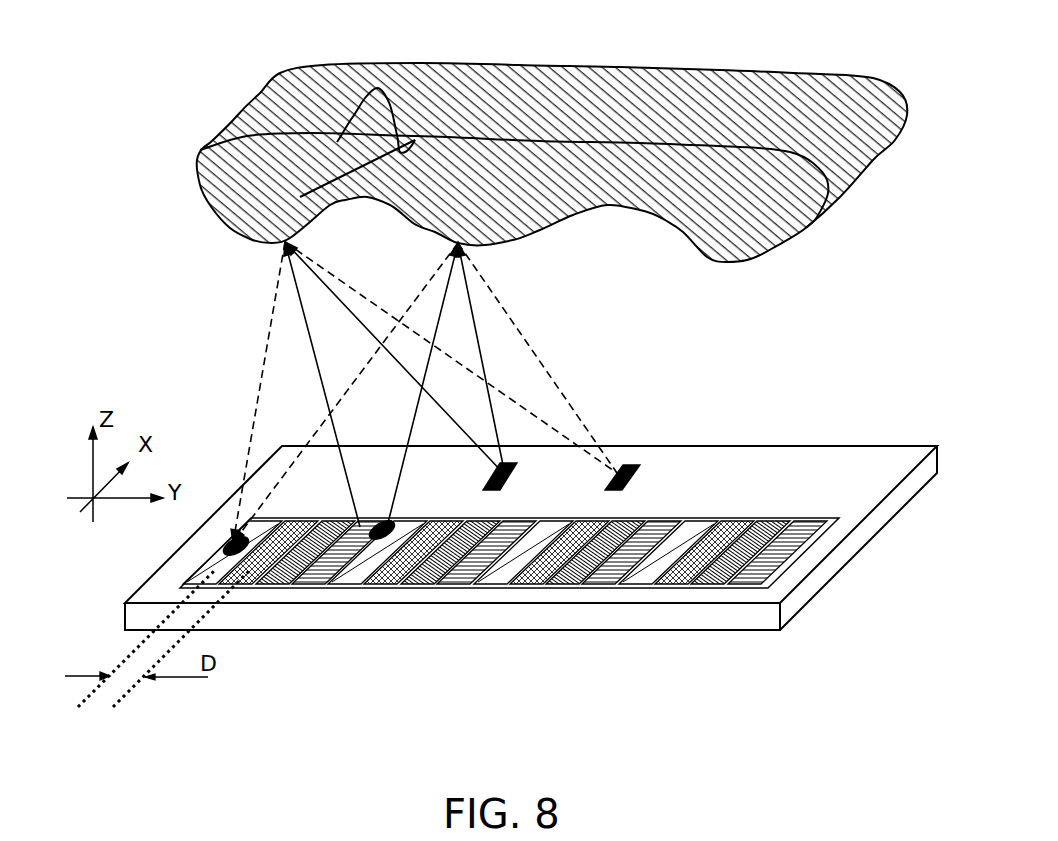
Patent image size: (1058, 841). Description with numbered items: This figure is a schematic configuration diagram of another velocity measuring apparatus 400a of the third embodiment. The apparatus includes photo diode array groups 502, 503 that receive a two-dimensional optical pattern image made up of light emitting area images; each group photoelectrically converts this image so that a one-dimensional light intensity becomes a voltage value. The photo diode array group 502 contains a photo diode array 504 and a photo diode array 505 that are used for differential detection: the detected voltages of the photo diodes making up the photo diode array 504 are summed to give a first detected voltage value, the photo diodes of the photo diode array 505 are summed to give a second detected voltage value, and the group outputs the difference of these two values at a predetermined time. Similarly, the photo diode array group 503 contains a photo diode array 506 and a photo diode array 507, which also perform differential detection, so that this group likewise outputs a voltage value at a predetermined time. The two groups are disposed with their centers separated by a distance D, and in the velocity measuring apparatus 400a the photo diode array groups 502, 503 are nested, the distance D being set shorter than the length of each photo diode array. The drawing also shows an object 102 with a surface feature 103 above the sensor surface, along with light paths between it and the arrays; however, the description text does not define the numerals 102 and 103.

The finger 102 is at (683, 232).
The fingerprint ridge 103 is at (415, 140).
The velocity measuring apparatus 400a is at (913, 297).
The photo diode array group 502 is at (359, 644).
The photo diode array group 503 is at (624, 644).
The photo diode array 504 is at (362, 578).
The photo diode array 505 is at (428, 578).
The photo diode array 506 is at (540, 575).
The photo diode array 507 is at (612, 575).